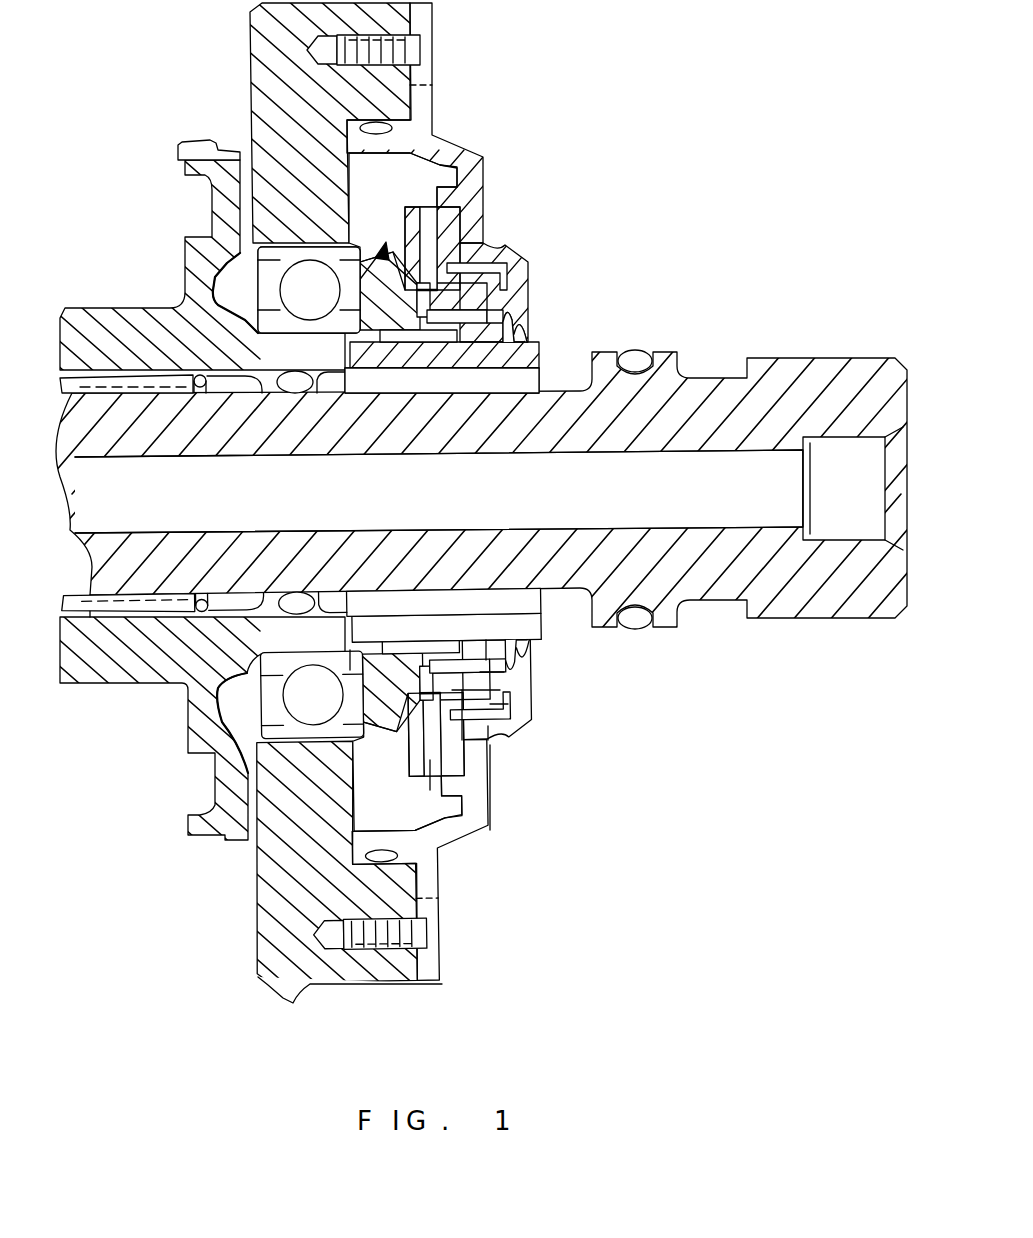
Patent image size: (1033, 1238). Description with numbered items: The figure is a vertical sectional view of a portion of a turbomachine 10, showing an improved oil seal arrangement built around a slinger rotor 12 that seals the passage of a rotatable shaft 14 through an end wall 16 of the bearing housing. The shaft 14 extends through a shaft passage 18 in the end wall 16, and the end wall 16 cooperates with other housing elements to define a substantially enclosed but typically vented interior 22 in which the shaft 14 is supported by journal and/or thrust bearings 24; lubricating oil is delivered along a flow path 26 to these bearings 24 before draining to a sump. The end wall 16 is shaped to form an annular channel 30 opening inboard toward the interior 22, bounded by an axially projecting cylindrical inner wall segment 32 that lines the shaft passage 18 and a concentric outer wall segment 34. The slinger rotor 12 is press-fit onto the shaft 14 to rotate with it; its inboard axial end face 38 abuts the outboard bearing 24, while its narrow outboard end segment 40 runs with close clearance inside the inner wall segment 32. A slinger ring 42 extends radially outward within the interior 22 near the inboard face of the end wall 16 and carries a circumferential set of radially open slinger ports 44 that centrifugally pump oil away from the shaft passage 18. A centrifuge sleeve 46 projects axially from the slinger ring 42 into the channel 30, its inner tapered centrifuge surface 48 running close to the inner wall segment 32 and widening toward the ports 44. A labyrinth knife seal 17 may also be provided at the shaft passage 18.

The turbomachine 10 is at (632, 180).
The slinger rotor 12 is at (455, 236).
The rotatable shaft 14 is at (527, 356).
The end wall 16 is at (520, 262).
The labyrinth knife seal 17 is at (517, 645).
The shaft passage 18 is at (525, 336).
The housing interior 22 is at (400, 194).
The bearings 24 is at (273, 263).
The oil flow path 26 is at (378, 297).
The annular channel 30 is at (487, 690).
The inner wall segment 32 is at (460, 680).
The outer wall segment 34 is at (488, 736).
The inboard axial end face 38 is at (352, 668).
The outboard end segment 40 is at (486, 362).
The slinger ring 42 is at (481, 771).
The slinger ports 44 is at (432, 776).
The centrifuge sleeve 46 is at (500, 708).
The centrifuge surface 48 is at (505, 677).